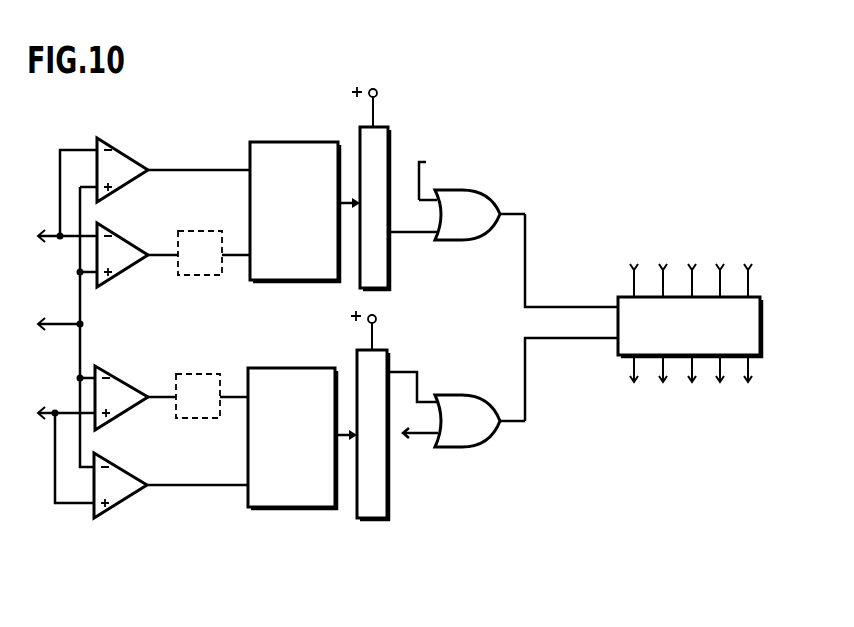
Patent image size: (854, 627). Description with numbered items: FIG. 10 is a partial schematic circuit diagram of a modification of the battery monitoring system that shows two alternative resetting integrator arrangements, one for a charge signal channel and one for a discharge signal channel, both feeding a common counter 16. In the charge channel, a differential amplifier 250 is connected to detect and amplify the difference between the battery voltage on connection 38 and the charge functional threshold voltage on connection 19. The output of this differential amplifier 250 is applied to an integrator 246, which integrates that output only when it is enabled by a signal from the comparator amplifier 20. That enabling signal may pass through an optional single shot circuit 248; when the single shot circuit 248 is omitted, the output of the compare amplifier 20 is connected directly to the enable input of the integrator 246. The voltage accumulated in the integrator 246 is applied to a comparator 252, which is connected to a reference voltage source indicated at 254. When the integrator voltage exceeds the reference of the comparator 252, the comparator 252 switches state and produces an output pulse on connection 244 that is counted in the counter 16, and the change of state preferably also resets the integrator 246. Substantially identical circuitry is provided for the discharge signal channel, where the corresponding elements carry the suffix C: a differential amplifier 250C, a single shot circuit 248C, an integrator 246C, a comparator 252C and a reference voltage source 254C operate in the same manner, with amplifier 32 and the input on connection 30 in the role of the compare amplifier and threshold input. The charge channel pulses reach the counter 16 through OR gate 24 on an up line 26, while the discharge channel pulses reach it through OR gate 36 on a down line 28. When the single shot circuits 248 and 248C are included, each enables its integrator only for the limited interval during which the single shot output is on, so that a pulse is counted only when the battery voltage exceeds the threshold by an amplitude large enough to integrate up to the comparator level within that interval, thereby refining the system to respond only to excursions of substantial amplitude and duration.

The counter 16 is at (628, 298).
The connection 19 is at (48, 230).
The comparator amplifier 20 is at (156, 229).
The OR gate (up) 24 is at (498, 178).
The up count line 26 is at (525, 243).
The down count line 28 is at (525, 385).
The second input signal line 30 is at (53, 406).
The amplifier 32 is at (133, 358).
The OR gate (down) 36 is at (478, 395).
The connection 38 is at (54, 320).
The connection 244 is at (406, 236).
The integrator 246 is at (272, 141).
The integrator 246C is at (288, 340).
The single shot circuit 248 is at (210, 230).
The single shot circuit 248C is at (211, 373).
The differential amplifier 250 is at (156, 130).
The differential amplifier 250C is at (108, 461).
The comparator 252 is at (390, 139).
The comparator 252C is at (388, 495).
The reference voltage source 254 is at (374, 110).
The reference voltage source 254C is at (373, 337).